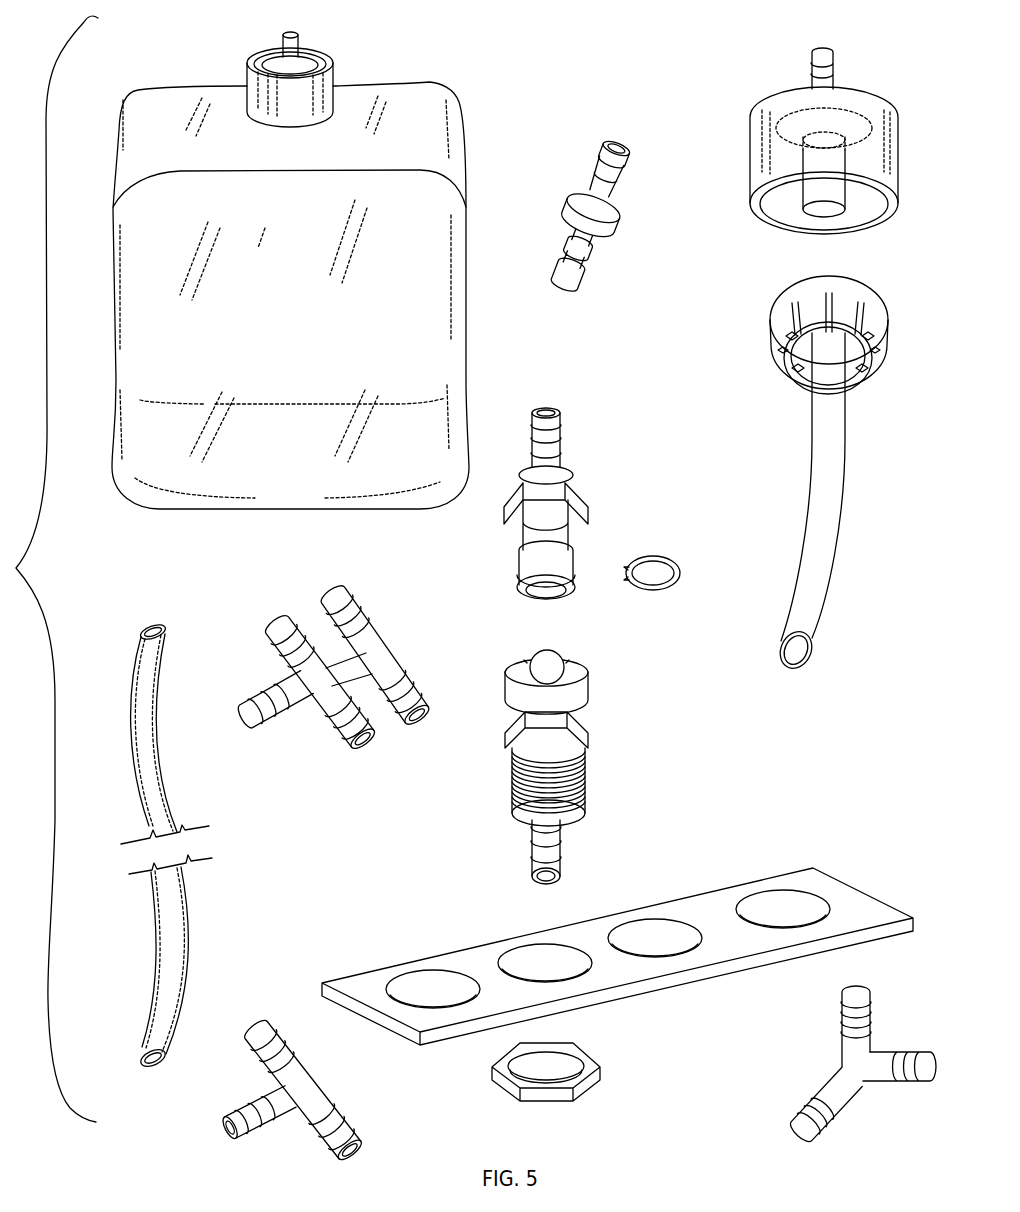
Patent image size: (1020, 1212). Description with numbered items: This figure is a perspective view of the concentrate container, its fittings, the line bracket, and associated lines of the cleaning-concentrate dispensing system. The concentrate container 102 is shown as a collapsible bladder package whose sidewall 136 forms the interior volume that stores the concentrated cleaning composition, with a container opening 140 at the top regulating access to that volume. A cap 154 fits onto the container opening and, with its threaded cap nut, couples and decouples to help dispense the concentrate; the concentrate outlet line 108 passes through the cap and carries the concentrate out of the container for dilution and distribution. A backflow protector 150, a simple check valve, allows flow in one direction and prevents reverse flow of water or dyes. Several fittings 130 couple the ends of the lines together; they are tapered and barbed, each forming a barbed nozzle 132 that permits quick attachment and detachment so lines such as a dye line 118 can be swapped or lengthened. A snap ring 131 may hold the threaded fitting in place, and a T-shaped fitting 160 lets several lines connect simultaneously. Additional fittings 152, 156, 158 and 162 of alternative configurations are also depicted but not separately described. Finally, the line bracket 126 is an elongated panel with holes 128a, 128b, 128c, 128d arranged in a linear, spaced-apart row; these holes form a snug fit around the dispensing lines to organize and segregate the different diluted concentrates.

The concentrate container 102 is at (460, 90).
The sidewall 136 is at (304, 329).
The container opening 140 is at (303, 63).
The backflow protector 150 is at (628, 140).
The cap 154 is at (780, 330).
The concentrate outlet line 108 is at (798, 505).
The hose fitting 152 is at (588, 480).
The snap ring 131 is at (660, 598).
The fitting 130 is at (598, 722).
The barbed nozzle 132 is at (532, 850).
The cross connector 156 is at (245, 632).
The dye line 118 is at (195, 795).
The line bracket 126 is at (845, 853).
The hole 128a is at (415, 990).
The hole 128b is at (513, 967).
The hole 128c is at (663, 938).
The hole 128d is at (782, 915).
The T-shaped fitting 160 is at (262, 1090).
The nut 162 is at (603, 1045).
The Y-connector 158 is at (802, 1075).